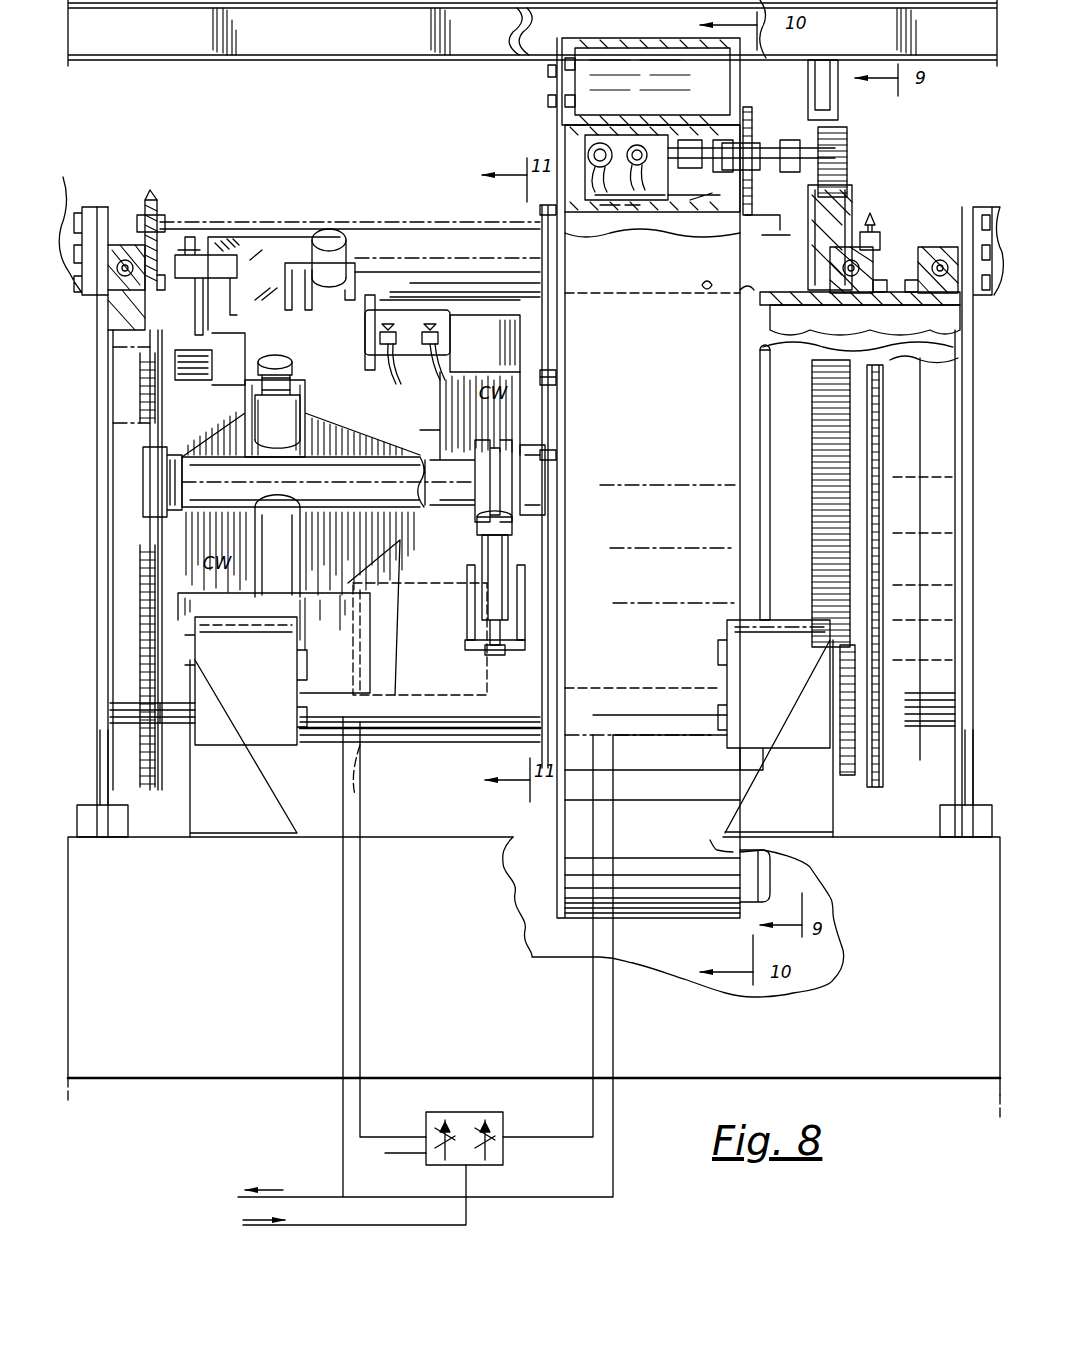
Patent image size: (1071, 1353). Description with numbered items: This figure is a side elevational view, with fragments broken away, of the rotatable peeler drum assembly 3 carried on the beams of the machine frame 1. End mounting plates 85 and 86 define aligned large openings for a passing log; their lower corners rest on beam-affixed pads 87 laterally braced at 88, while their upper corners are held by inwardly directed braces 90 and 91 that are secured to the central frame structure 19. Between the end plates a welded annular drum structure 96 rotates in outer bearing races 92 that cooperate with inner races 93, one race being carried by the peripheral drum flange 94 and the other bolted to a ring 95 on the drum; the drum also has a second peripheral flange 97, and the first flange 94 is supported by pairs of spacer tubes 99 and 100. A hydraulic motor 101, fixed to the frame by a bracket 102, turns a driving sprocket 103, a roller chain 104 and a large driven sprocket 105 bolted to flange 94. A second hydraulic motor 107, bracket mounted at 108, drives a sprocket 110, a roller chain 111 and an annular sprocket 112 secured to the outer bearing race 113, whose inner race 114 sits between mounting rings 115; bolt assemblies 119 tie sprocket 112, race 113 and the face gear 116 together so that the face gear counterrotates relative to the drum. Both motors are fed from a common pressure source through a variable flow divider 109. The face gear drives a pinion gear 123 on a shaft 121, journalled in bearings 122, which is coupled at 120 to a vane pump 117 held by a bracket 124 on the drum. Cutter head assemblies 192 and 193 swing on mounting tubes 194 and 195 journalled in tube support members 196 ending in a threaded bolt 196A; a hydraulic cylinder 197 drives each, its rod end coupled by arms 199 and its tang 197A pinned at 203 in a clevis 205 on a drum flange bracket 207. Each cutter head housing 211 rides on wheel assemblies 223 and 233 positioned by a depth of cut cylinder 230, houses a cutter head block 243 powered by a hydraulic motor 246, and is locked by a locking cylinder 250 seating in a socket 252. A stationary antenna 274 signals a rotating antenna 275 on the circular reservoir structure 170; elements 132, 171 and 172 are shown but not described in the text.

The machine frame 1 is at (245, 1068).
The peeler drum assembly 3 is at (392, 164).
The central frame structure 19 is at (483, 47).
The end mounting plate 85 is at (97, 455).
The end mounting plate 86 is at (968, 460).
The pad 87 is at (105, 822).
The lateral brace 88 is at (100, 760).
The brace 90 is at (80, 185).
The brace 91 is at (992, 195).
The outer bearing race 92 is at (115, 200).
The inner bearing race 93 is at (122, 290).
The peripheral drum flange 94 is at (175, 240).
The ring 95 is at (920, 268).
The annular drum structure 96 is at (740, 292).
The second peripheral flange 97 is at (556, 378).
The spacer tube 99 is at (478, 280).
The spacer tube 100 is at (420, 745).
The hydraulic motor 101 is at (274, 669).
The bracket 102 is at (270, 790).
The driving sprocket 103 is at (190, 712).
The roller chain 104 is at (140, 615).
The driven sprocket 105 is at (153, 198).
The second hydraulic motor 107 is at (711, 695).
The bracket mount 108 is at (785, 730).
The variable flow divider 109 is at (505, 1160).
The sprocket 110 is at (852, 695).
The roller chain 111 is at (883, 515).
The annular sprocket 112 is at (878, 235).
The outer bearing race 113 is at (858, 247).
The inner bearing race 114 is at (850, 300).
The mounting ring 115 is at (825, 300).
The face gear 116 is at (812, 240).
The vane pump 117 is at (625, 135).
The bolt assembly 119 is at (885, 282).
The coupling 120 is at (688, 140).
The shaft 121 is at (768, 140).
The bearing 122 is at (718, 140).
The pinion gear 123 is at (847, 150).
The bracket 124 is at (700, 195).
The bracket 132 is at (758, 215).
The circular reservoir structure 170 is at (642, 35).
The column wall 171 is at (558, 135).
The vertical shaft 172 is at (565, 240).
The infeed cutter head assembly 192 is at (268, 231).
The outfeed cutter head assembly 193 is at (470, 740).
The mounting tube 194 is at (338, 505).
The mounting tube 195 is at (457, 475).
The tube support member 196 is at (252, 482).
The threaded bolt 196A is at (165, 440).
The hydraulic cylinder 197 is at (508, 548).
The tang 197A is at (500, 655).
The arm 199 is at (545, 482).
The pin 203 is at (408, 640).
The clevis 205 is at (520, 580).
The drum flange bracket 207 is at (525, 648).
The cutter head housing 211 is at (290, 240).
The wheel and tire assembly 223 is at (357, 382).
The depth of cut cylinder 230 is at (347, 246).
The wheel and tire assembly 233 is at (185, 380).
The cutter head block 243 is at (395, 675).
The hydraulic motor 246 is at (409, 302).
The locking cylinder 250 is at (300, 430).
The socket 252 is at (258, 372).
The stationary antenna 274 is at (805, 80).
The rotating antenna 275 is at (770, 462).